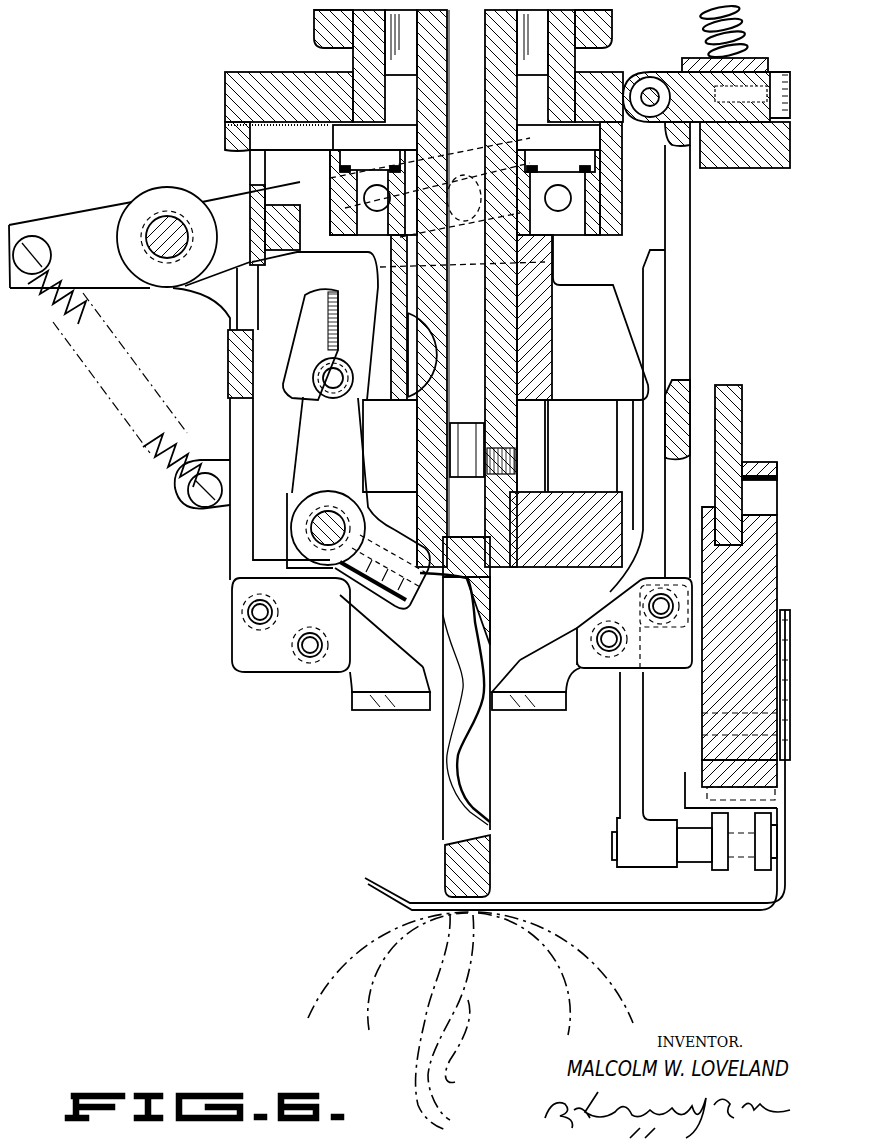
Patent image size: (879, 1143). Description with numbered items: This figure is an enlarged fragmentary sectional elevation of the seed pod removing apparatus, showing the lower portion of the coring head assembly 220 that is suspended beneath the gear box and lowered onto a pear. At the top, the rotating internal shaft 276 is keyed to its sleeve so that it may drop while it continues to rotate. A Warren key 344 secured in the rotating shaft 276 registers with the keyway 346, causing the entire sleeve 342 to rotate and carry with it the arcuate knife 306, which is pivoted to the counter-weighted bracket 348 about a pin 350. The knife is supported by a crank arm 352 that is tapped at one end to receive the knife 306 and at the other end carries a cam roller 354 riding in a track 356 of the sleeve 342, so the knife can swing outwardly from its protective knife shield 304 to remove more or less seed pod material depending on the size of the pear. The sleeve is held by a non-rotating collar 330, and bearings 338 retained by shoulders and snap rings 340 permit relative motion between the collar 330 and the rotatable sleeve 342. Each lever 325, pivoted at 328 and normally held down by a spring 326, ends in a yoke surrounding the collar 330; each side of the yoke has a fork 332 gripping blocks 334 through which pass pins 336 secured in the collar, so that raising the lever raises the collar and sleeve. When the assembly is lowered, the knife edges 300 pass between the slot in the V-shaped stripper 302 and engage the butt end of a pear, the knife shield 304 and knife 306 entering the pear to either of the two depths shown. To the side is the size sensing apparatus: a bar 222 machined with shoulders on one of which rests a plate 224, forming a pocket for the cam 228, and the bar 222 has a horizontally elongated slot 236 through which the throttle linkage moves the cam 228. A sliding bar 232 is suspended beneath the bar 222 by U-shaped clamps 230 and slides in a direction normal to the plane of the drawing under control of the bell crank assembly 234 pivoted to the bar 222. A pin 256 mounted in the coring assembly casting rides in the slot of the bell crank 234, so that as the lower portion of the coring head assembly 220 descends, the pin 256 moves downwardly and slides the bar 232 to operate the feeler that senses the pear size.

The coring head assembly 220 is at (352, 762).
The bar 222 is at (720, 686).
The plate 224 is at (704, 634).
The cam 228 is at (740, 414).
The U-shaped clamps 230 is at (703, 785).
The sliding bar 232 is at (705, 757).
The bell crank assembly 234 is at (626, 766).
The horizontally elongated slot 236 is at (782, 470).
The pin 256 is at (660, 384).
The internal shaft 276 is at (420, 33).
The knife edges 300 is at (408, 712).
The V-shaped stripper 302 is at (555, 904).
The knife shield 304 is at (490, 866).
The arcuate knife 306 is at (456, 790).
The lever 325 is at (96, 218).
The spring 326 is at (57, 326).
The pivot 328 is at (166, 222).
The collar 330 is at (335, 160).
The fork 332 is at (530, 139).
The blocks 334 is at (530, 163).
The pins 336 is at (478, 208).
The bearings 338 is at (378, 184).
The snap rings 340 is at (375, 137).
The sleeve 342 is at (392, 280).
The Warren key 344 is at (428, 402).
The keyway 346 is at (402, 296).
The counter-weighted bracket 348 is at (384, 498).
The pin 350 is at (333, 510).
The crank arm 352 is at (313, 442).
The cam roller 354 is at (318, 398).
The track 356 is at (335, 298).